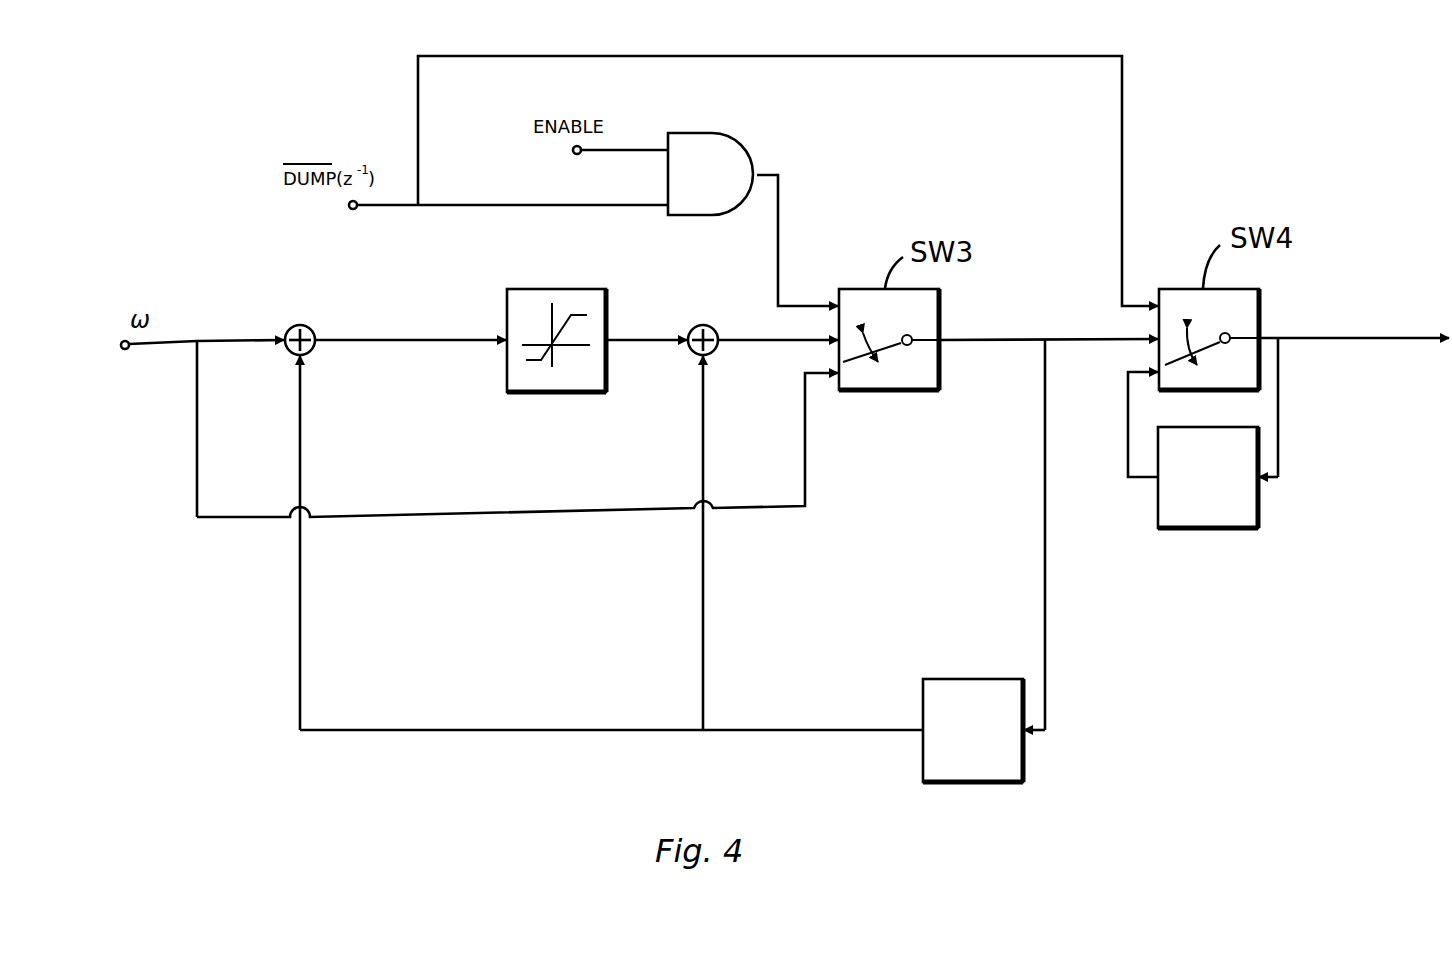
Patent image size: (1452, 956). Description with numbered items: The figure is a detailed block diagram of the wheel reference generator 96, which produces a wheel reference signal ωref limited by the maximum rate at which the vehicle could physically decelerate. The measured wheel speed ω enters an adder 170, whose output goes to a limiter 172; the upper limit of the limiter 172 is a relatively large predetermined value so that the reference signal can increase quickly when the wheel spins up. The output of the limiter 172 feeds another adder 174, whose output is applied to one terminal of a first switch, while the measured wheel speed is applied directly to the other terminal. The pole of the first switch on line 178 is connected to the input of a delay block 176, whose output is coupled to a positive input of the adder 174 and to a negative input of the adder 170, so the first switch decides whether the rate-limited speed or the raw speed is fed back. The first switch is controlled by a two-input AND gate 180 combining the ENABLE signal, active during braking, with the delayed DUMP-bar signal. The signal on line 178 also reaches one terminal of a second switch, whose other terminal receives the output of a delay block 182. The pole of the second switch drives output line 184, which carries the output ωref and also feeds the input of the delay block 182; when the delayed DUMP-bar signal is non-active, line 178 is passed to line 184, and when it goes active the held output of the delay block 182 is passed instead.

The adder 170 is at (293, 324).
The limiter 172 is at (565, 287).
The adder 174 is at (698, 325).
The delay block 176 is at (953, 678).
The line 178 is at (1005, 337).
The AND gate 180 is at (712, 133).
The delay block 182 is at (1207, 530).
The output line 184 is at (1345, 340).
The wheel reference generator 96 is at (1192, 751).